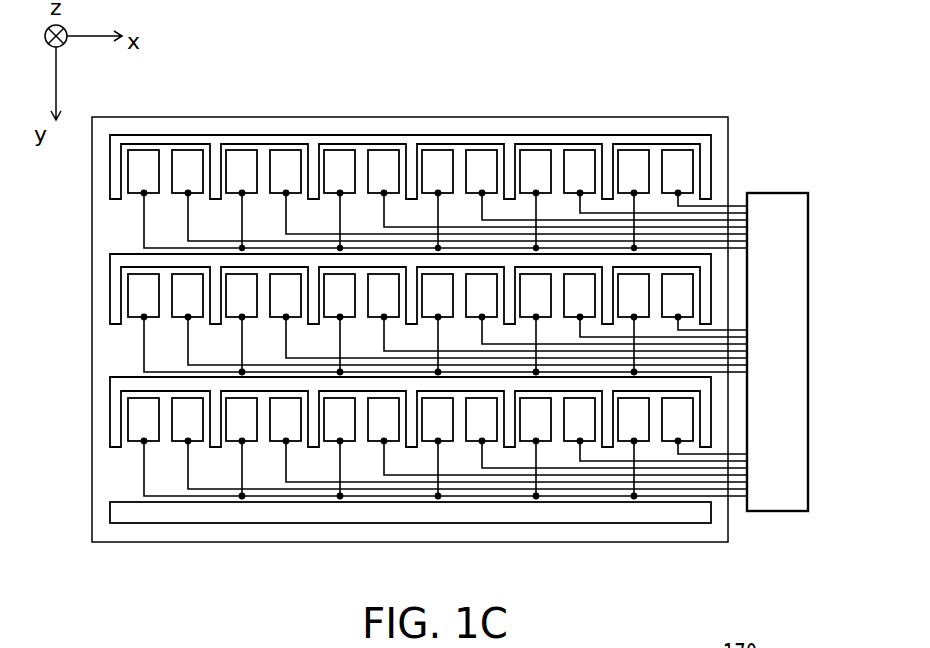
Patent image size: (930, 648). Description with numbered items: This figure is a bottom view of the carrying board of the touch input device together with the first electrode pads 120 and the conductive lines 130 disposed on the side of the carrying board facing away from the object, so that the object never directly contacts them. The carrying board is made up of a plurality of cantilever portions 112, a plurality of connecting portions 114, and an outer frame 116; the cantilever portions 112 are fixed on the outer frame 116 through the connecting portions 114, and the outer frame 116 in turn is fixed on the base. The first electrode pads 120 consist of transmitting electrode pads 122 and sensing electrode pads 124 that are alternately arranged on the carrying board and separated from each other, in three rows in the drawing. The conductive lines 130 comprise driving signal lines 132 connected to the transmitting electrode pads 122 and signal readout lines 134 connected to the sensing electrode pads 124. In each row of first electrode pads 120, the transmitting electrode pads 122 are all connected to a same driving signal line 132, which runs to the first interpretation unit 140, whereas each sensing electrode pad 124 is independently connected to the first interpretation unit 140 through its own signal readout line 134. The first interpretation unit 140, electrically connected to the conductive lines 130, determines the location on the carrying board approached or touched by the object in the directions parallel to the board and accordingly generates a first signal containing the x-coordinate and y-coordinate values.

The cantilever portion 112 is at (167, 167).
The connecting portion 114 is at (132, 217).
The outer frame 116 is at (102, 290).
The first electrode pad 120 is at (461, 119).
The transmitting electrode pad 122 is at (437, 158).
The sensing electrode pad 124 is at (480, 158).
The conductive line 130 is at (445, 149).
The driving signal line 132 is at (254, 255).
The signal readout line 134 is at (188, 213).
The first interpretation unit 140 is at (777, 192).